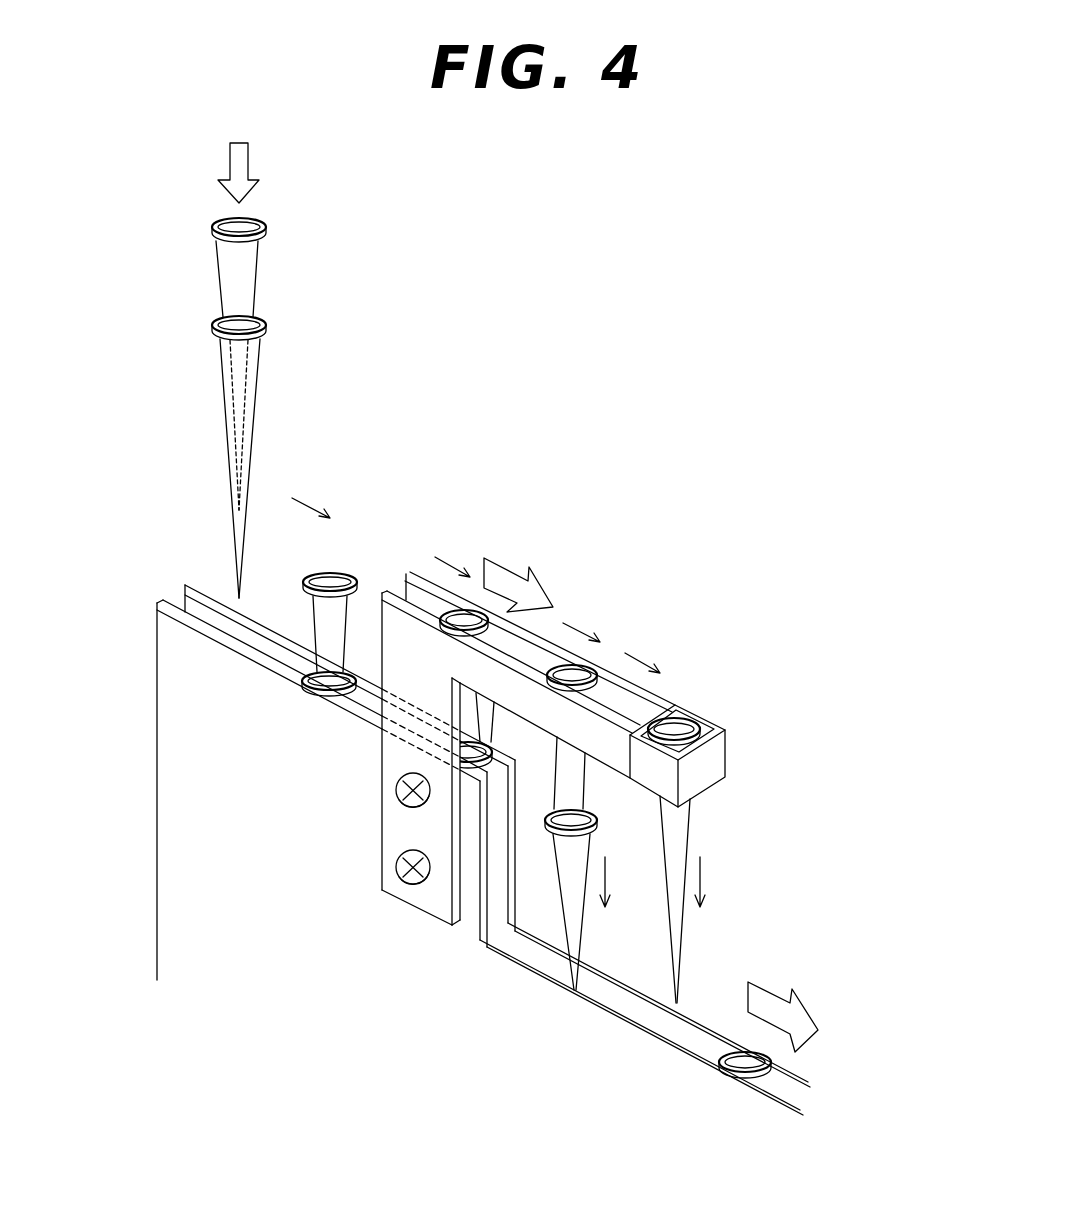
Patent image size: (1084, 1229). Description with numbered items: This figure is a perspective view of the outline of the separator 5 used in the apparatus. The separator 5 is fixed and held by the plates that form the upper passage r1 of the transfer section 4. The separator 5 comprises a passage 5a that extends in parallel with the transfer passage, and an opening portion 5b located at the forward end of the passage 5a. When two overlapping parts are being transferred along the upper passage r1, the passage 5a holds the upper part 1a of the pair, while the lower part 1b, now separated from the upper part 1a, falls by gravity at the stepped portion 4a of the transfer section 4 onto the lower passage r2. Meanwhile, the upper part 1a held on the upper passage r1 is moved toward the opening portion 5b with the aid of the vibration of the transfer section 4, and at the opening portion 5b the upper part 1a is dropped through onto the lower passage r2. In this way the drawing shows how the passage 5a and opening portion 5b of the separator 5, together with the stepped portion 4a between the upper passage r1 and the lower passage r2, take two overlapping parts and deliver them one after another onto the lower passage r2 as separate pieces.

The upper part 1a is at (250, 273).
The lower part 1b is at (258, 376).
The transfer section 4 is at (195, 761).
The stepped portion 4a is at (500, 878).
The separator 5 is at (678, 689).
The passage 5a is at (528, 655).
The opening portion 5b is at (700, 735).
The upper passage r1 is at (237, 630).
The lower passage r2 is at (686, 1022).